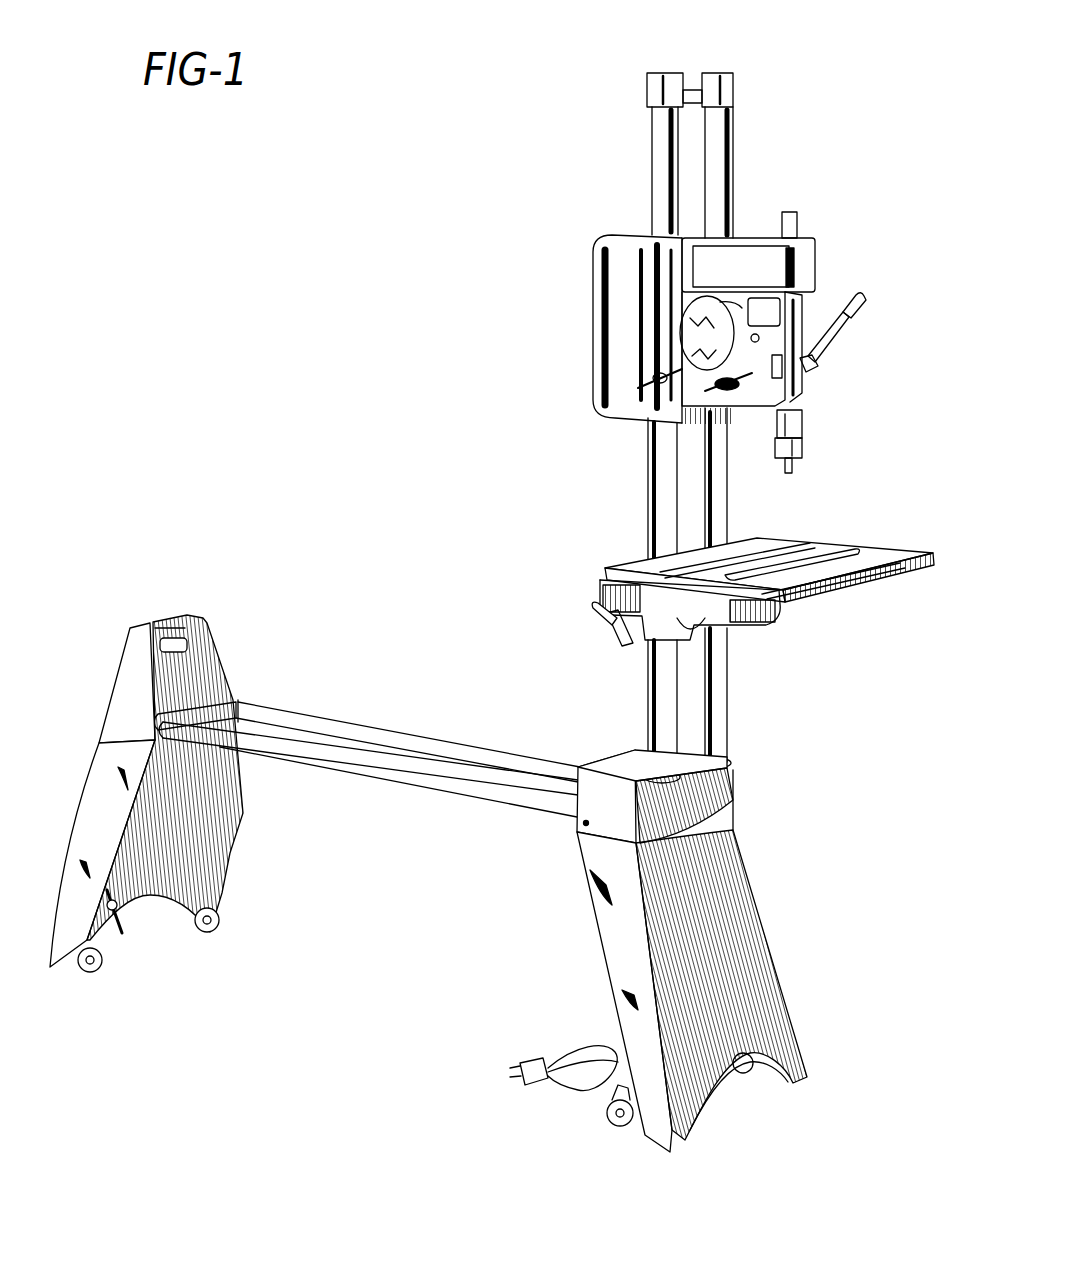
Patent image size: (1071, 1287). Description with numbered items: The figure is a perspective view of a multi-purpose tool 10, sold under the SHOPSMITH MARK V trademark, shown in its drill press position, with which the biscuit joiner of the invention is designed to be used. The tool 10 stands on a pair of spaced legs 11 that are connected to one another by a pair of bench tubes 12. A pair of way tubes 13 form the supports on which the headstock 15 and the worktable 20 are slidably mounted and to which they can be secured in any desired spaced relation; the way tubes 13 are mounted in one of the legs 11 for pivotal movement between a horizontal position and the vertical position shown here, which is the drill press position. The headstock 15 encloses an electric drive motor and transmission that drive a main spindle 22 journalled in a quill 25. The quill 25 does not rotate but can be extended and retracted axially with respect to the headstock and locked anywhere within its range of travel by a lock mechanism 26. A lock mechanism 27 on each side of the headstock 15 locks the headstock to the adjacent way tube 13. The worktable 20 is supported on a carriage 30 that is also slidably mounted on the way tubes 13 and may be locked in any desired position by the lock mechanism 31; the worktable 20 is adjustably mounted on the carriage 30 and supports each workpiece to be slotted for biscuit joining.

The multi-purpose tool 10 is at (618, 473).
The legs 11 is at (230, 813).
The bench tubes 12 is at (367, 744).
The way tubes 13 is at (648, 703).
The headstock 15 is at (582, 289).
The worktable 20 is at (878, 597).
The main spindle 22 is at (793, 468).
The quill 25 is at (802, 423).
The lock mechanism 26 is at (736, 392).
The lock mechanism 27 is at (650, 381).
The carriage 30 is at (585, 595).
The lock mechanism 31 is at (608, 623).